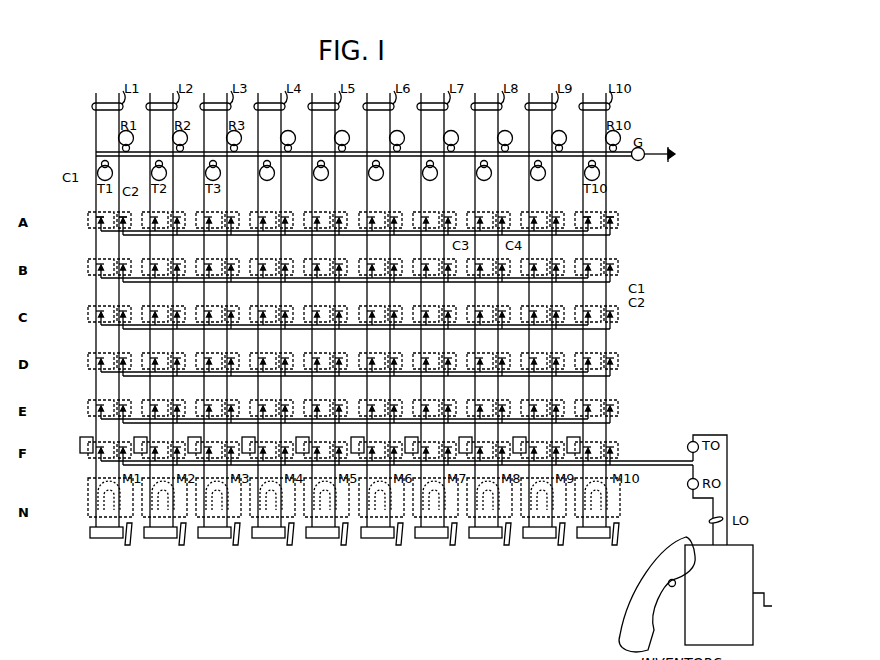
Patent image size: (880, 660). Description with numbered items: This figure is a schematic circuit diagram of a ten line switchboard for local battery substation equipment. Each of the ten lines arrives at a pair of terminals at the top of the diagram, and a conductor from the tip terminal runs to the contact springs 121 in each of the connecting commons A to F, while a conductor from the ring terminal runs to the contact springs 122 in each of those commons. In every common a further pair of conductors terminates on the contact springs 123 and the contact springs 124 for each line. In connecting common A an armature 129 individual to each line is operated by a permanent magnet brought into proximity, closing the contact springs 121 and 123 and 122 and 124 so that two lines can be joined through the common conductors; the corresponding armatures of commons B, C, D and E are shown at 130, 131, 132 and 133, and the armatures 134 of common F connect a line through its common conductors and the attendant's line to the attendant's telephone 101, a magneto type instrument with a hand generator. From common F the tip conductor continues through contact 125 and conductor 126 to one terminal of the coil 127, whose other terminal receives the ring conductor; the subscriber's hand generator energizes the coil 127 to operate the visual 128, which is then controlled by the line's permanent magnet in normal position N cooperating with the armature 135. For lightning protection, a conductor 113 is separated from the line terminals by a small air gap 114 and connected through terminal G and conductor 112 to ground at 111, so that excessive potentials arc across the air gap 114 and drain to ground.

The attendant's telephone 101 is at (695, 594).
The ground 111 is at (671, 157).
The conductor 112 is at (669, 148).
The conductor 113 is at (628, 158).
The air gap 114 is at (96, 152).
The contact springs 121 is at (96, 217).
The contact springs 122 is at (119, 218).
The contact springs 123 is at (101, 231).
The contact springs 124 is at (123, 235).
The contact 125 is at (84, 437).
The conductor 126 is at (96, 472).
The coil 127 is at (98, 538).
The visual 128 is at (128, 545).
The armature 129 is at (90, 213).
The row B crosspoint switch 130 is at (88, 262).
The row C crosspoint switch 131 is at (88, 308).
The row D crosspoint switch 132 is at (88, 355).
The row E crosspoint switch 133 is at (88, 402).
The armatures 134 is at (88, 447).
The armature 135 is at (88, 512).